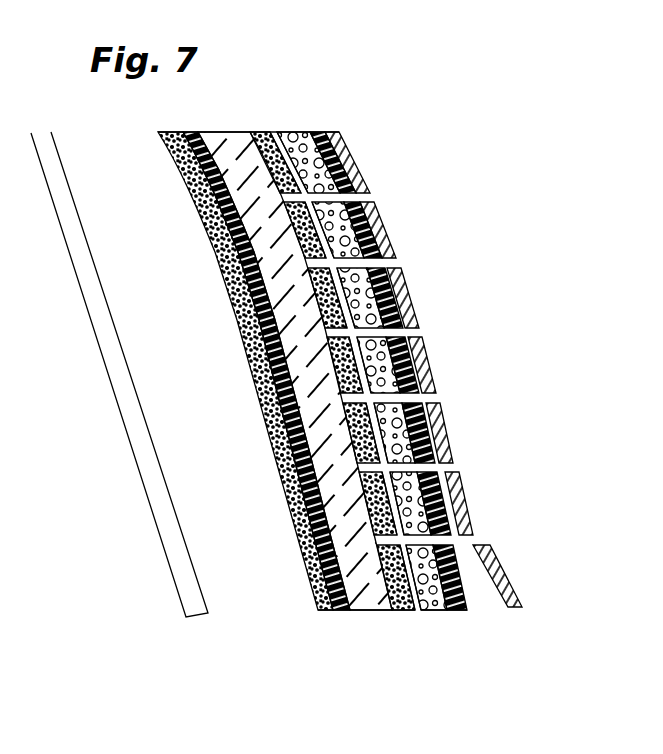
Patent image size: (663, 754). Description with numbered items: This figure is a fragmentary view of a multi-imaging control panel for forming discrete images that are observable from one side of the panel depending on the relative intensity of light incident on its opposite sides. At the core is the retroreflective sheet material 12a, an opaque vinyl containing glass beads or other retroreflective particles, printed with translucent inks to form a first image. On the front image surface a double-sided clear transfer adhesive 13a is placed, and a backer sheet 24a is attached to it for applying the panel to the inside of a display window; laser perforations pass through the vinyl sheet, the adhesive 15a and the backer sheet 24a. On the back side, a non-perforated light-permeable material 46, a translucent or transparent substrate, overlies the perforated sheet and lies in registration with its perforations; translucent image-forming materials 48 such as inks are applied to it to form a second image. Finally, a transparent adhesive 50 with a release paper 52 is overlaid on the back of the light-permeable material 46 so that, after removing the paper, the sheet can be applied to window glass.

The retroreflective sheet material 12a is at (386, 402).
The transparent adhesive 50 is at (283, 450).
The translucent image-forming materials 48 is at (307, 552).
The light-permeable material 46 is at (363, 608).
The adhesive 15a is at (393, 611).
The double-sided clear transfer adhesive 13a is at (462, 611).
The backer sheet 24a is at (530, 612).
The release paper 52 is at (197, 613).